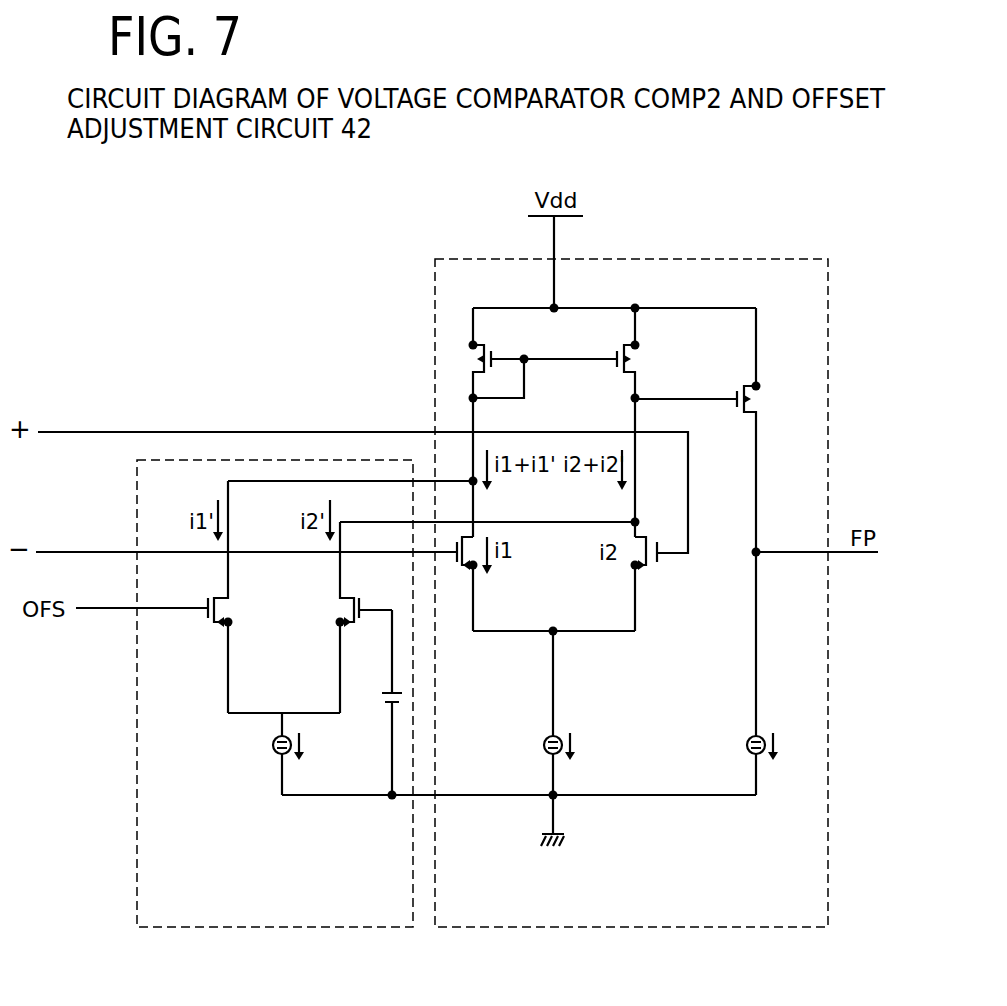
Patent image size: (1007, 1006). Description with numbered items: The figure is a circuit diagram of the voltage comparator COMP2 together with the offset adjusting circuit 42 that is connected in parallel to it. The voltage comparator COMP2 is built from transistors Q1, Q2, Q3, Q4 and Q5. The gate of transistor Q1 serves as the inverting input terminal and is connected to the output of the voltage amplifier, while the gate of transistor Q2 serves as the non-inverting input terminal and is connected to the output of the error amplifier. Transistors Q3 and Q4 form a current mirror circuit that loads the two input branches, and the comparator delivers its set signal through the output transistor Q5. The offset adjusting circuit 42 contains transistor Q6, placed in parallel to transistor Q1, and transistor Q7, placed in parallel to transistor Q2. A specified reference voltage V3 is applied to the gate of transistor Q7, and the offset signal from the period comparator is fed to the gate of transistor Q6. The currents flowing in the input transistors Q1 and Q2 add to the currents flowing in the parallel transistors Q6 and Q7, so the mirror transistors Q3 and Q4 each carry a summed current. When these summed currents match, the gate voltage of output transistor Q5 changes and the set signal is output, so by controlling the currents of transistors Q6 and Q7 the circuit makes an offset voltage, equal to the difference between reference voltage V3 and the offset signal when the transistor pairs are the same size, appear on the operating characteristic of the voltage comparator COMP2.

The offset adjusting circuit 42 is at (200, 460).
The voltage comparator COMP2 is at (795, 259).
The transistor Q1 is at (459, 584).
The transistor Q2 is at (653, 575).
The transistor Q3 is at (499, 355).
The transistor Q4 is at (602, 355).
The output transistor Q5 is at (717, 430).
The transistor Q6 is at (203, 597).
The transistor Q7 is at (346, 617).
The reference voltage V3 is at (377, 705).